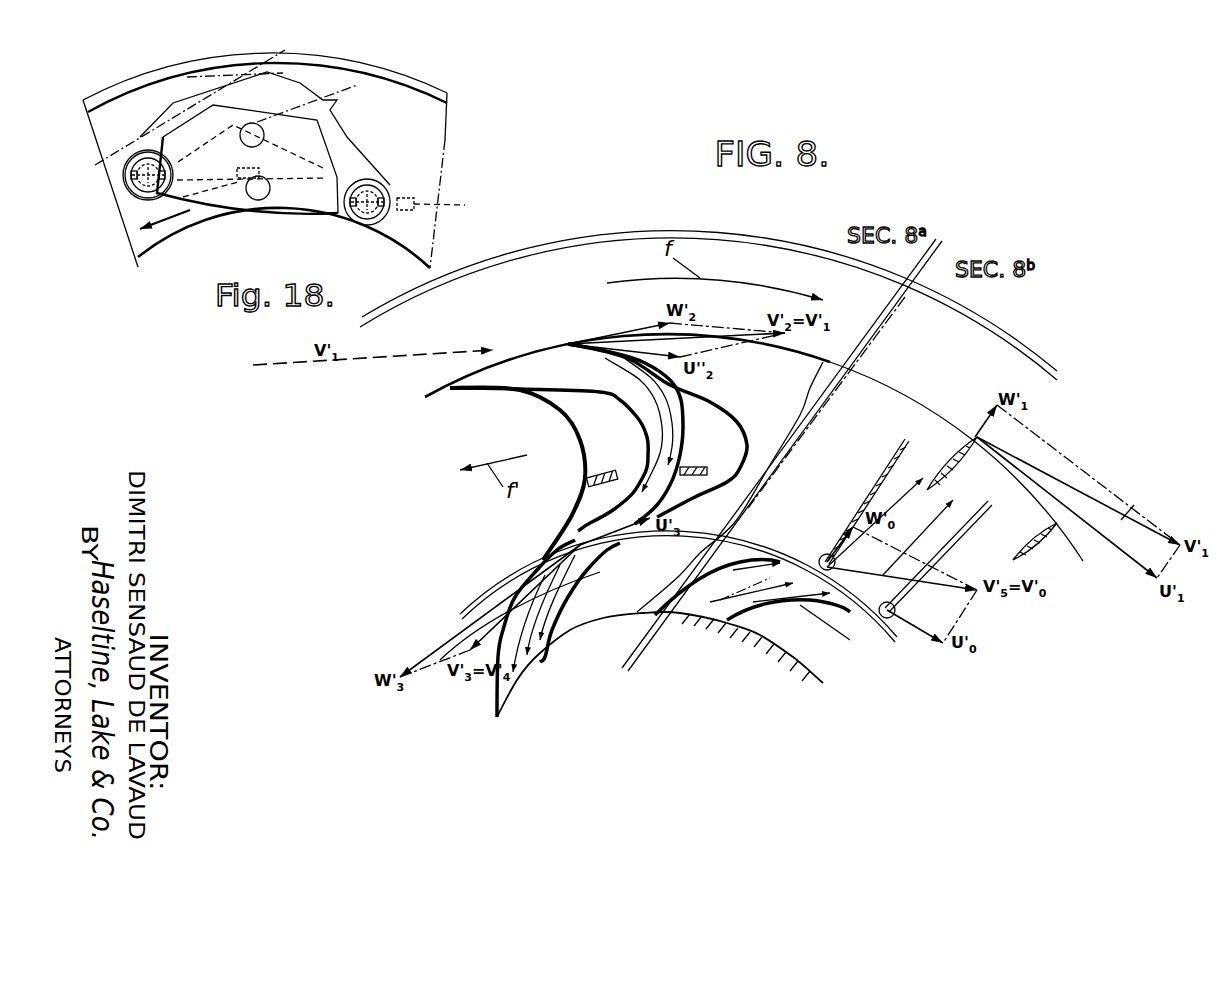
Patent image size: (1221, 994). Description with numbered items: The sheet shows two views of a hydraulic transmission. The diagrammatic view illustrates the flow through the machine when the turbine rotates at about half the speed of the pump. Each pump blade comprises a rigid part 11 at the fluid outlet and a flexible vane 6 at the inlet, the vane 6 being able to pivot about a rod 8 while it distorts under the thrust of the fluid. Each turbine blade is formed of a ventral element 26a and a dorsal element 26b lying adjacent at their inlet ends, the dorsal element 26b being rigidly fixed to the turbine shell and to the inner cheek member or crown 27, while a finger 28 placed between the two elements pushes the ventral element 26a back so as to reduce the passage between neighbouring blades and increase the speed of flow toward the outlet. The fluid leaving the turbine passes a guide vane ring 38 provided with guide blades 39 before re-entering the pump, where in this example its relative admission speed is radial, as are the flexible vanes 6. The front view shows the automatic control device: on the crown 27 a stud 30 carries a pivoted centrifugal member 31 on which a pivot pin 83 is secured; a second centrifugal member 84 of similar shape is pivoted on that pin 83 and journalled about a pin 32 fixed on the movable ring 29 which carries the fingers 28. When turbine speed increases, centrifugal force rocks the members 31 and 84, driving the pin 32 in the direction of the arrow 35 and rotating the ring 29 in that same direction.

In FIG. 8, the ventral element of turbine blade 26a is at (684, 410).
In FIG. 8, the dorsal element of turbine blade 26b is at (749, 443).
In FIG. 18, the finger 28 is at (308, 212).
In FIG. 8, the finger 28 is at (603, 473).
In FIG. 8, the flexible vane 6 is at (887, 477).
In FIG. 8, the rigid part 11 is at (950, 460).
In FIG. 8, the rod 8 is at (824, 556).
In FIG. 8, the guide vane ring 38 is at (558, 655).
In FIG. 8, the guide blade 39 is at (662, 618).
In FIG. 18, the pivot pin 83 is at (258, 130).
In FIG. 18, the centrifugal member 84 is at (262, 118).
In FIG. 18, the crown 27 is at (393, 130).
In FIG. 18, the centrifugal member 31 is at (148, 175).
In FIG. 18, the arrow 35 is at (156, 214).
In FIG. 18, the stud 30 is at (125, 194).
In FIG. 18, the ring 29 is at (142, 238).
In FIG. 18, the pin 32 is at (367, 205).